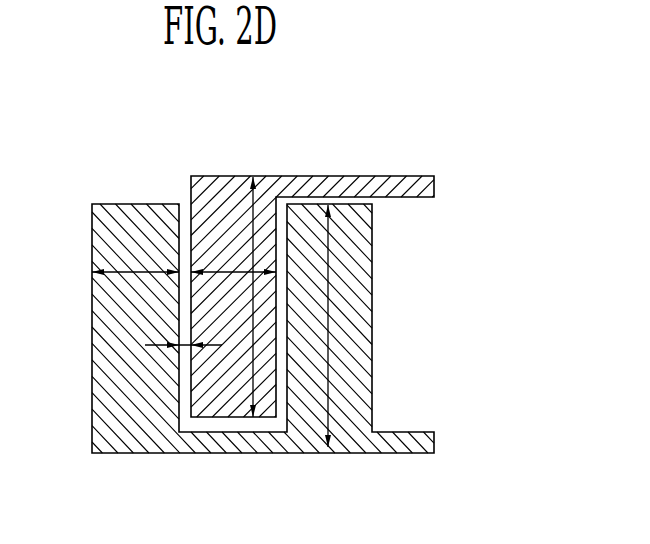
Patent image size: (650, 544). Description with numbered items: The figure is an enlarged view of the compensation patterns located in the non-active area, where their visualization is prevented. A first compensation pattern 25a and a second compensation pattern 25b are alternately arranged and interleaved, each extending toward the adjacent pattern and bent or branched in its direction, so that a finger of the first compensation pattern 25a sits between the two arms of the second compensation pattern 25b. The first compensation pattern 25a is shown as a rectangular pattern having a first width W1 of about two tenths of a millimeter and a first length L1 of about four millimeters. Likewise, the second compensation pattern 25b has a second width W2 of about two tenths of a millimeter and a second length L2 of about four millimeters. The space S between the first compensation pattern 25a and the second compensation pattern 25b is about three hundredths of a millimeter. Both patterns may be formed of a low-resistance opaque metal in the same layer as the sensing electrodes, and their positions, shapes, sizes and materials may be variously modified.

The first compensation pattern 25a is at (226, 185).
The second compensation pattern 25b is at (138, 437).
The first width W1 is at (233, 259).
The second width W2 is at (135, 259).
The first length L1 is at (244, 297).
The second length L2 is at (338, 326).
The space S is at (183, 332).